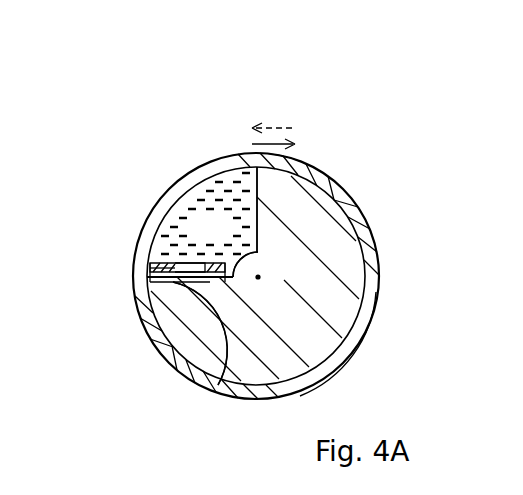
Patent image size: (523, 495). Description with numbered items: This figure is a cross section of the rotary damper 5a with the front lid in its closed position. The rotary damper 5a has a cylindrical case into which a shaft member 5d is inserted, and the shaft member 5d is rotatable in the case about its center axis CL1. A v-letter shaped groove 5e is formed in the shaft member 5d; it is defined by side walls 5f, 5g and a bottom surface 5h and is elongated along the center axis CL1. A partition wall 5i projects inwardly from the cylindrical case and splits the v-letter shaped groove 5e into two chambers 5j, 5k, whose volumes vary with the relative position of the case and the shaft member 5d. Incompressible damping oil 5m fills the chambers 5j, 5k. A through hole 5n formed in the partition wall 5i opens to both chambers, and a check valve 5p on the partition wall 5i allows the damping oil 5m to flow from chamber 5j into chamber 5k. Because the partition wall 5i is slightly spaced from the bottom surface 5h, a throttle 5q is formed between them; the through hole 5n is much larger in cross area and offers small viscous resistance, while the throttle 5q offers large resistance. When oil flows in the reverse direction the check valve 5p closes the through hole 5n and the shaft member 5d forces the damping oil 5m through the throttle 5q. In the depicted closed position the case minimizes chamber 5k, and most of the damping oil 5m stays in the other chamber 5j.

The rotary damper 5a is at (306, 82).
The v-letter shaped groove 5e is at (211, 166).
The shaft member 5d is at (350, 312).
The bottom surface 5h is at (259, 243).
The damping oil 5m is at (226, 240).
The side wall 5f is at (244, 172).
The chamber 5k is at (189, 184).
The chamber 5j is at (166, 196).
The through hole 5n is at (180, 261).
The partition wall 5i is at (160, 264).
The check valve 5p is at (213, 283).
The side wall 5g is at (227, 281).
The throttle 5q is at (224, 289).
The center axis CL1 is at (258, 277).